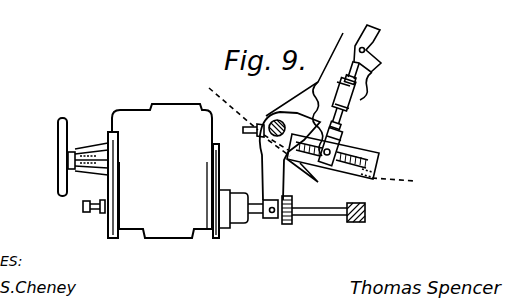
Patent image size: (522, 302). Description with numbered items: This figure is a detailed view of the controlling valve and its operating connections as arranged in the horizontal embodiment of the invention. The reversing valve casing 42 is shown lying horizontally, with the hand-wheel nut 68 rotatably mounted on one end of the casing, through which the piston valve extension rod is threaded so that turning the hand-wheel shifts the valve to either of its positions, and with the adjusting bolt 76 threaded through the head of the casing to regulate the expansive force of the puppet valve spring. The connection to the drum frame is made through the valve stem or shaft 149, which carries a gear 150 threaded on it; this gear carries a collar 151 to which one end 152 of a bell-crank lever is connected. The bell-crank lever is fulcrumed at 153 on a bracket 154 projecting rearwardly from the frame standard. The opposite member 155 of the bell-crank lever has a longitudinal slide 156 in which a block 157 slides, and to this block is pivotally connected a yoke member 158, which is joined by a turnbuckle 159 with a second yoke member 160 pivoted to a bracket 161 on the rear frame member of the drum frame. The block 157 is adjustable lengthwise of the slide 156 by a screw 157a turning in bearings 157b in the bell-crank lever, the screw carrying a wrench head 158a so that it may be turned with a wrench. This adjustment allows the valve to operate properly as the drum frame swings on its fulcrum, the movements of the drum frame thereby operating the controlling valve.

The casing 42 is at (170, 216).
The hand-wheel nut 68 is at (58, 126).
The adjusting bolt 76 is at (87, 211).
The valve stem or shaft 149 is at (255, 221).
The gear 150 is at (300, 222).
The collar 151 is at (276, 218).
The end of bell-crank lever 152 is at (268, 166).
The fulcrum 153 is at (277, 120).
The bracket 154 is at (319, 82).
The opposite member of bell-crank lever 155 is at (362, 145).
The longitudinal slide 156 is at (380, 163).
The block 157 is at (321, 199).
The screw 157a is at (366, 181).
The bearings 157b is at (228, 114).
The yoke member 158 is at (352, 125).
The wrench head 158a is at (243, 130).
The turnbuckle 159 is at (357, 97).
The yoke member 160 is at (376, 72).
The bracket 161 is at (382, 33).